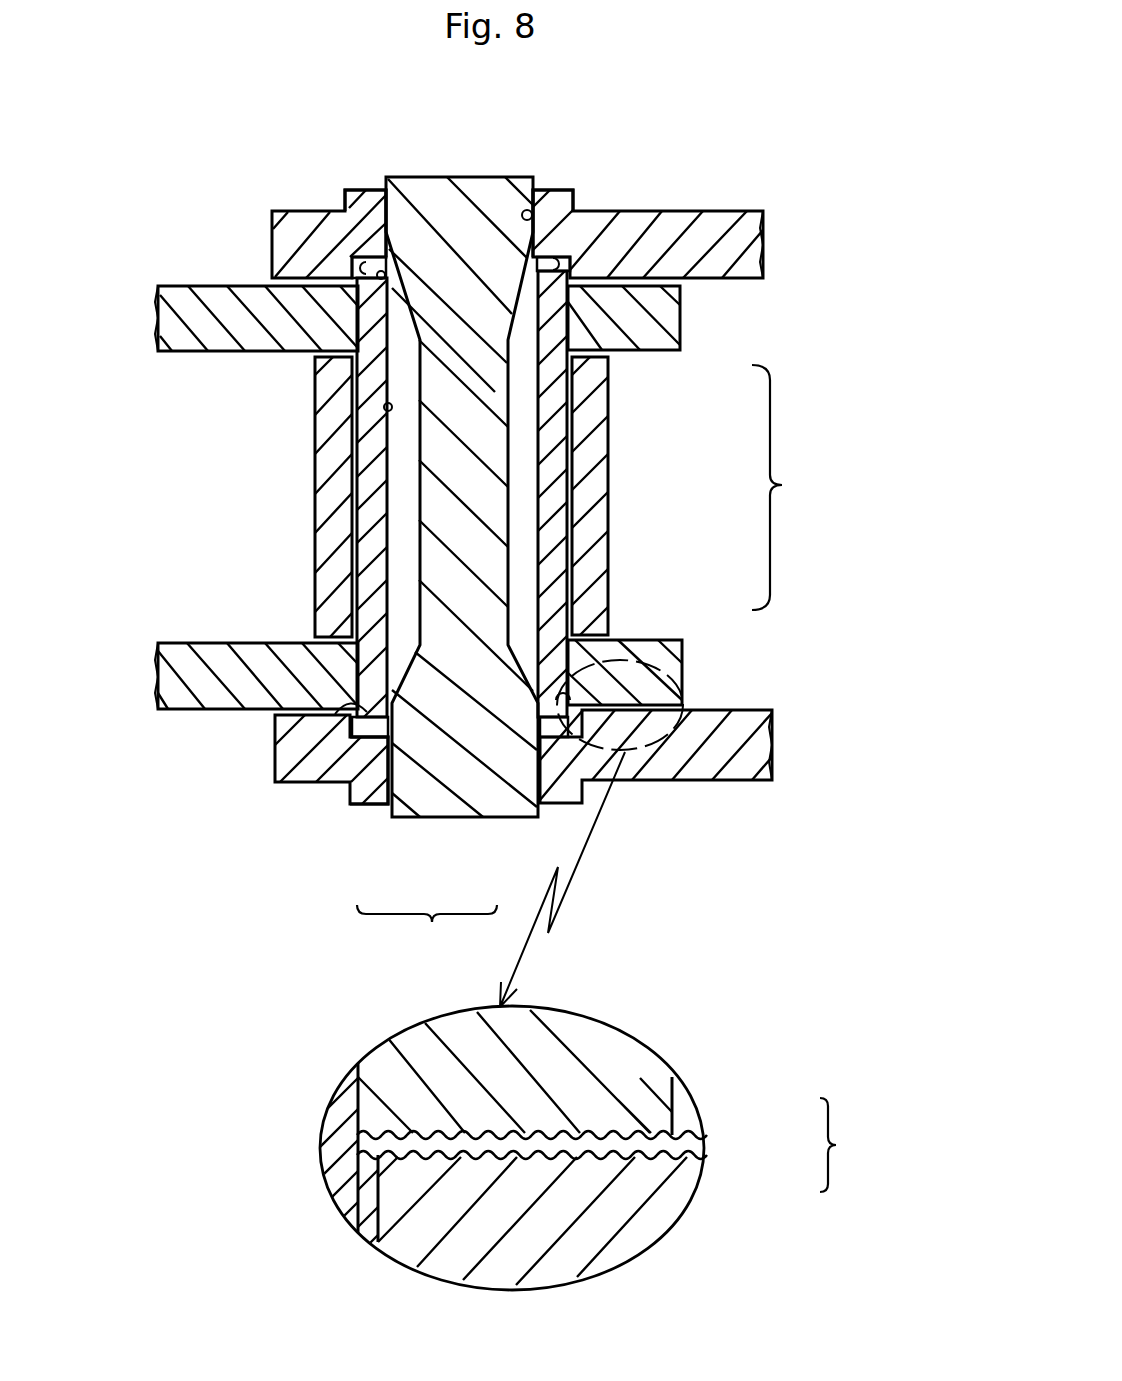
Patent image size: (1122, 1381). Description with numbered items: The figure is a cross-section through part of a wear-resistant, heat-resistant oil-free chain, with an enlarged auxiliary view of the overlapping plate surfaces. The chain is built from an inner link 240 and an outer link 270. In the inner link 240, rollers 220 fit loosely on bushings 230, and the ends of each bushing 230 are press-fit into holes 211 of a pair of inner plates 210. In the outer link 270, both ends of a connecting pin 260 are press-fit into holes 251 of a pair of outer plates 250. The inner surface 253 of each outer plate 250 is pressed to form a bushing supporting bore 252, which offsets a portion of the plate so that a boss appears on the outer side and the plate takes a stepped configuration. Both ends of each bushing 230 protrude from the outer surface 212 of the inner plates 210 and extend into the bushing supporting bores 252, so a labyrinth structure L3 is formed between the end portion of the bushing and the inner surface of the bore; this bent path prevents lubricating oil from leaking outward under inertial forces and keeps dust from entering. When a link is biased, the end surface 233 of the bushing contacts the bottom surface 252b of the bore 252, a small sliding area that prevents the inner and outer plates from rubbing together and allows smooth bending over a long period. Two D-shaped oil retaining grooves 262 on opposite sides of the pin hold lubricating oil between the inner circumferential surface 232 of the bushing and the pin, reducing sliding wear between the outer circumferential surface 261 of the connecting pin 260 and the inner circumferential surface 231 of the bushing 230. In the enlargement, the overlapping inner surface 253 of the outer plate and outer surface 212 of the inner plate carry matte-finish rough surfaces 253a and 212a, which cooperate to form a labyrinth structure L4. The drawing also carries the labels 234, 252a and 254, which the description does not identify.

The inner plates 210 is at (652, 352).
The holes 211 is at (367, 673).
The outer surface of inner plate 212 is at (193, 286).
The rough surface 212a is at (705, 1137).
The rollers 220 is at (597, 527).
The bushings 230 is at (553, 462).
The inner circumferential surface of the bushing 231 is at (565, 240).
The inner circumferential surface of the bushing 232 is at (383, 410).
The end surface of the bushing 233 is at (350, 546).
The sleeve end step 234 is at (368, 250).
The inner link 240 is at (791, 487).
The outer plates 250 is at (712, 220).
The holes 251 is at (553, 258).
The bushing supporting bore 252 is at (622, 752).
The left seal ring 252a is at (350, 262).
The bottom surface of the bushing supporting bore 252b is at (565, 262).
The inner surface of the outer plate 253 is at (735, 281).
The rough surface 253a is at (705, 1160).
The end cap block 254 is at (300, 212).
The connecting pin 260 is at (462, 819).
The outer circumferential surface of the connecting pin 261 is at (386, 280).
The oil retaining grooves 262 is at (402, 472).
The outer link 270 is at (427, 928).
The labyrinth structure L3 is at (530, 270).
The labyrinth structure L4 is at (844, 1145).